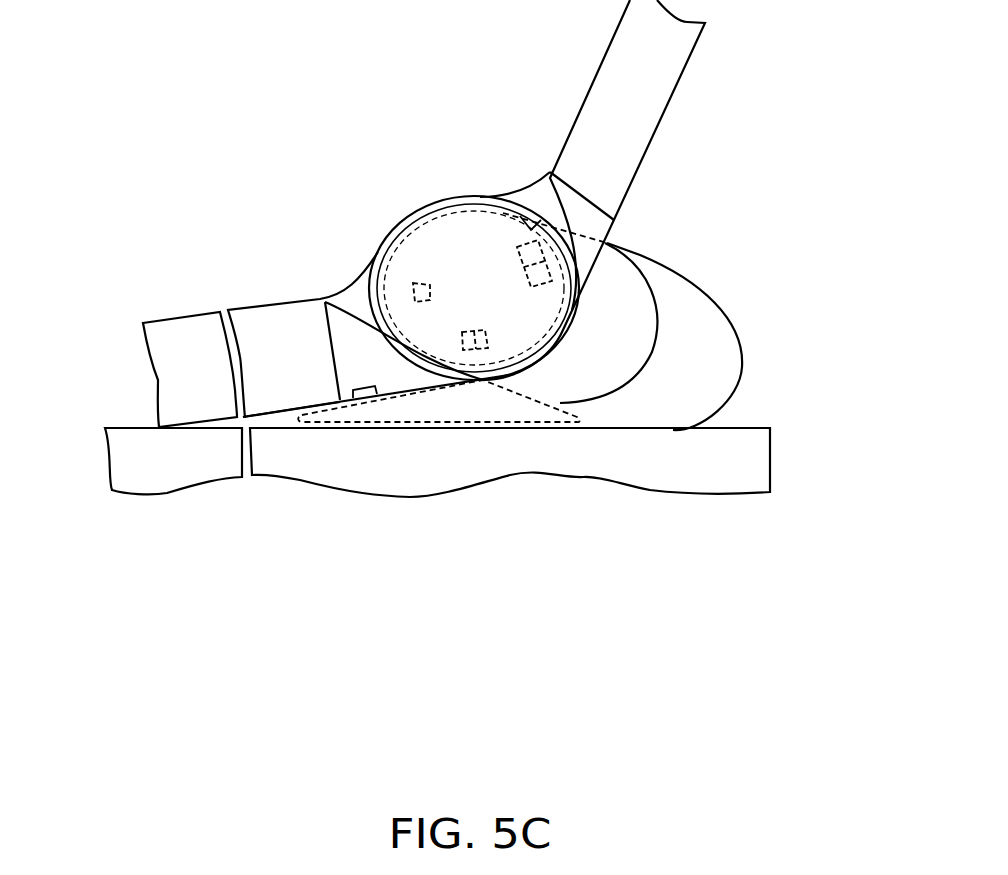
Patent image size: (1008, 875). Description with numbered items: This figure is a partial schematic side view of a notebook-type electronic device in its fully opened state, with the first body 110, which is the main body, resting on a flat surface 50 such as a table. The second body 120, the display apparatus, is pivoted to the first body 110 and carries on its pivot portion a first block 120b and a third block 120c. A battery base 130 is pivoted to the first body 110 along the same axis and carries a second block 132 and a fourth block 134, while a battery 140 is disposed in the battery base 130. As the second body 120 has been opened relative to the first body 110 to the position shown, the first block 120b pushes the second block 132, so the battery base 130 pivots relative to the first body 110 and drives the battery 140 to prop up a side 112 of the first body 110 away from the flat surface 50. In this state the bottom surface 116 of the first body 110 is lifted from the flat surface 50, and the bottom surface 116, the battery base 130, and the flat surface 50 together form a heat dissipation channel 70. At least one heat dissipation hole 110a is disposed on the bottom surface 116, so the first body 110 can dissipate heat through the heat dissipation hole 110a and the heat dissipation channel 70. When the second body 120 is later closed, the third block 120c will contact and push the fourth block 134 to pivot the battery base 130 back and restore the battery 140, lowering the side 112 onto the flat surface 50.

The flat surface 50 is at (125, 430).
The first body 110 is at (267, 327).
The heat dissipation hole 110a is at (365, 395).
The side 112 is at (436, 409).
The bottom surface 116 is at (320, 404).
The second body 120 is at (640, 107).
The first block 120b is at (503, 212).
The third block 120c is at (421, 283).
The battery base 130 is at (610, 280).
The second block 132 is at (528, 273).
The fourth block 134 is at (478, 348).
The battery 140 is at (703, 352).
The heat dissipation channel 70 is at (553, 425).